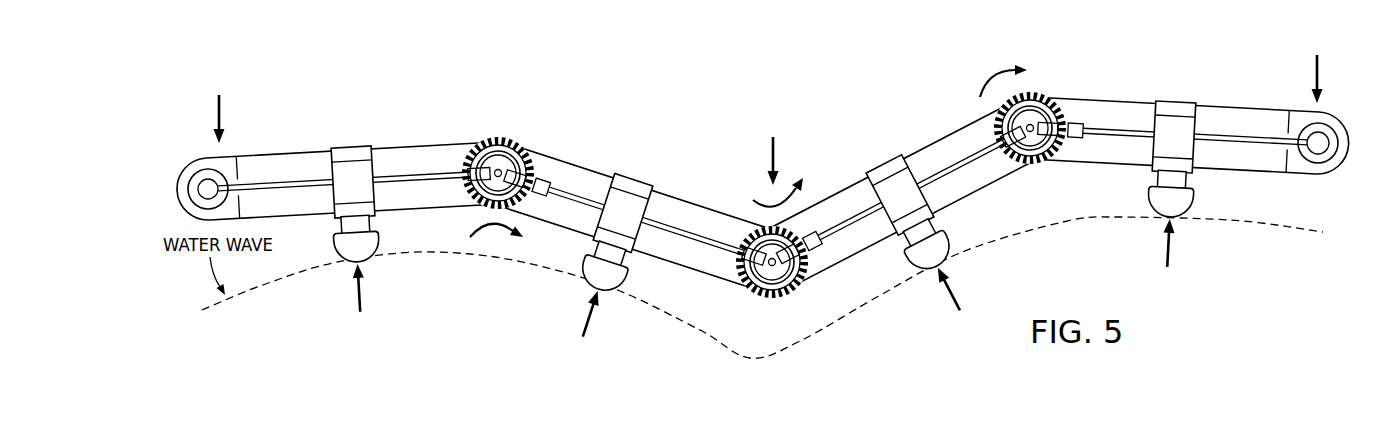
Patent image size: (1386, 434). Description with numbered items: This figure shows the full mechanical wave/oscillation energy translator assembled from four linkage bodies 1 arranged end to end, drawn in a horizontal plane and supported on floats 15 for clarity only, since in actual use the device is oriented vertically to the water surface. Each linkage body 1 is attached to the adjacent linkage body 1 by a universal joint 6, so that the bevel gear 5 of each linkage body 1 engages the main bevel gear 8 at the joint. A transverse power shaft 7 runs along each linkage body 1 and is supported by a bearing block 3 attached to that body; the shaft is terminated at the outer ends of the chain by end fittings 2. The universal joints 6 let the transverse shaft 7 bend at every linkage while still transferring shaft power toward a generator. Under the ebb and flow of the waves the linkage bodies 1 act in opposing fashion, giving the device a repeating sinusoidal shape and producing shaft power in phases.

The linkage body 1 is at (279, 153).
The end pivot ring 2 is at (202, 160).
The bearing block 3 is at (349, 147).
The bevel gear 5 is at (546, 179).
The universal joint 6 is at (498, 160).
The transverse power shaft 7 is at (416, 174).
The main bevel gear 8 is at (478, 140).
The float 15 is at (333, 240).